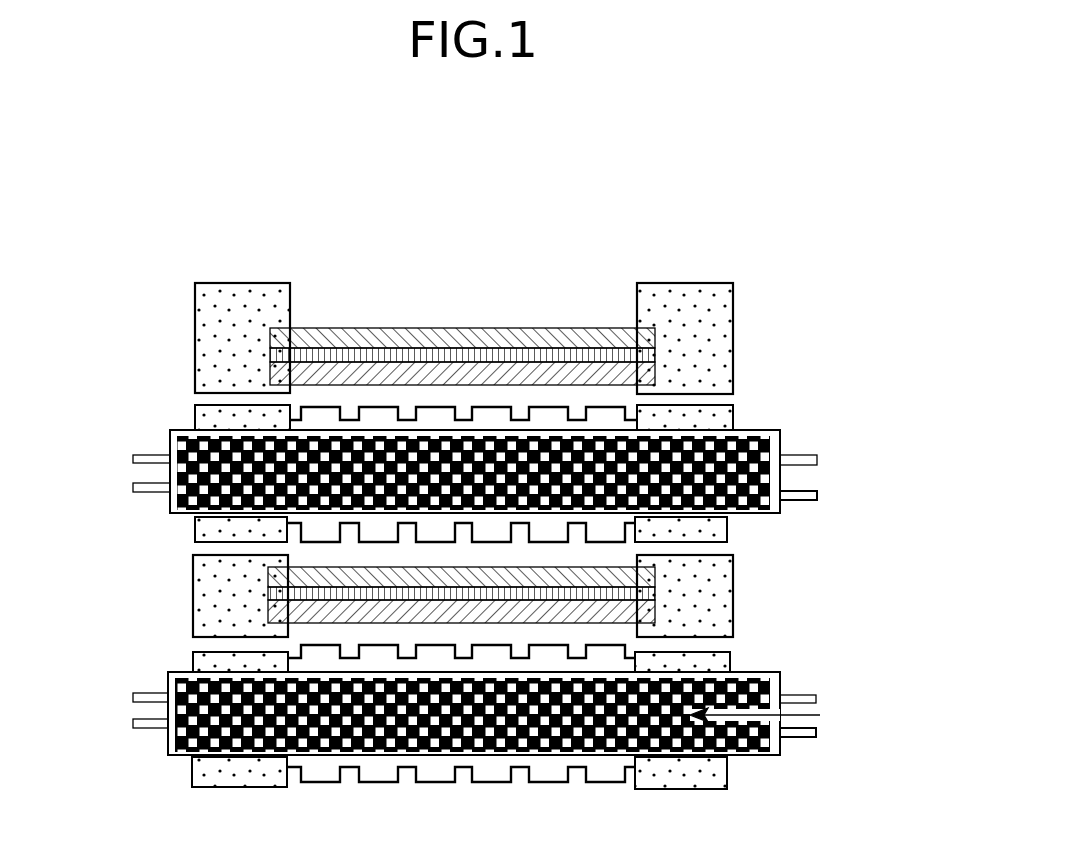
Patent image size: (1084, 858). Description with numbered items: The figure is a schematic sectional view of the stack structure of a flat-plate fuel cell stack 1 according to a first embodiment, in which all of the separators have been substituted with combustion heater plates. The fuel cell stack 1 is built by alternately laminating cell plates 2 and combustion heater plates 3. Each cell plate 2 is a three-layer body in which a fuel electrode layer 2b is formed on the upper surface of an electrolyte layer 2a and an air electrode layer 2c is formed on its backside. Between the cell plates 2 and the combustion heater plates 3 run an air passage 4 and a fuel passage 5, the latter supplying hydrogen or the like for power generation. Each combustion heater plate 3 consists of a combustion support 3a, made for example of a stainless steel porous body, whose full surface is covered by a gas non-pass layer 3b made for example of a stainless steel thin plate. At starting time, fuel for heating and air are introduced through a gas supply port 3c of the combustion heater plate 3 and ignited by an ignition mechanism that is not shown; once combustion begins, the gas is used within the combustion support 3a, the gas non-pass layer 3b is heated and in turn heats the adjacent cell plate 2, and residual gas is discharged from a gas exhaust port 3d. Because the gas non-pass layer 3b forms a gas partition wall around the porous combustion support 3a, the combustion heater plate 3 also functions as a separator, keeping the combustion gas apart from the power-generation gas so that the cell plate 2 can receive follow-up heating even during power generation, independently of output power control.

The fuel cell stack 1 is at (628, 254).
The cell plate 2 is at (522, 446).
The electrolyte layer 2a is at (646, 356).
The fuel electrode layer 2b is at (647, 340).
The air electrode layer 2c is at (644, 379).
The combustion heater plate 3 is at (912, 400).
The combustion support 3a is at (768, 470).
The gas non-pass layer 3b is at (742, 432).
The gas supply port 3c is at (784, 486).
The gas exhaust port 3d is at (140, 458).
The air passage 4 is at (516, 398).
The fuel passage 5 is at (355, 557).